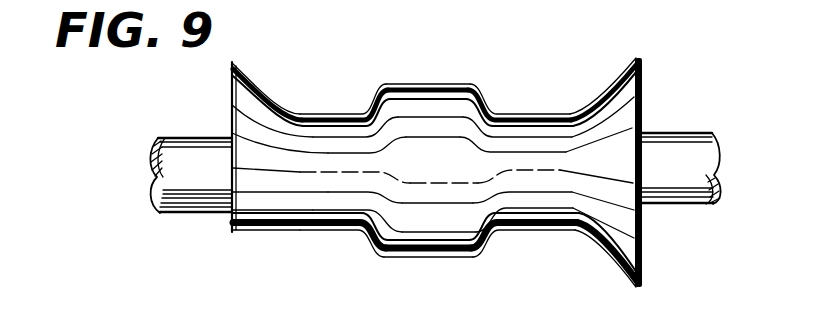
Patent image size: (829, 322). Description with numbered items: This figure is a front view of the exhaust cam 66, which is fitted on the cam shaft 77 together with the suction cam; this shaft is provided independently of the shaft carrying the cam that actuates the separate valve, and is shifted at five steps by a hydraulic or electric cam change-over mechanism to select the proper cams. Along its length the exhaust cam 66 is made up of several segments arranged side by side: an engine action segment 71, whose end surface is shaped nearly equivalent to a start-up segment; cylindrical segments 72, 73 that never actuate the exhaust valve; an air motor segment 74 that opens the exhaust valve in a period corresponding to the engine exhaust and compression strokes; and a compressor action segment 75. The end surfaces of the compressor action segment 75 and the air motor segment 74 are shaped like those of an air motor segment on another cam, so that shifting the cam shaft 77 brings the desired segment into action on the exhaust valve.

The exhaust cam 66 is at (128, 178).
The engine action segment 71 is at (262, 80).
The cylindrical segment 72 is at (326, 112).
The cylindrical segment 73 is at (532, 112).
The air motor segment 74 is at (424, 82).
The compressor action segment 75 is at (613, 79).
The cam shaft 77 is at (684, 132).